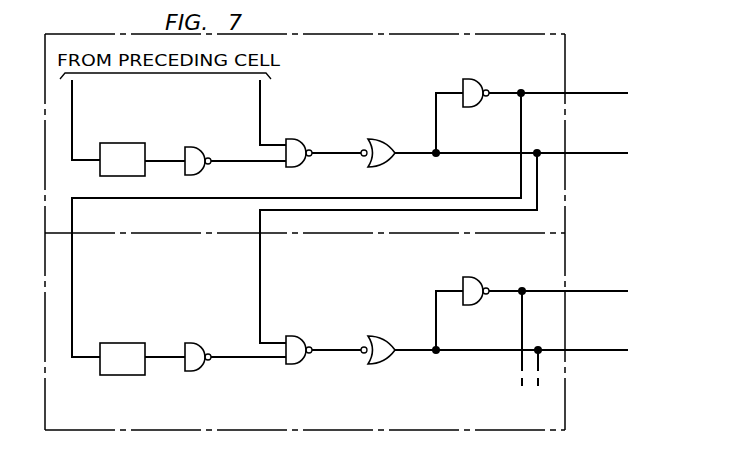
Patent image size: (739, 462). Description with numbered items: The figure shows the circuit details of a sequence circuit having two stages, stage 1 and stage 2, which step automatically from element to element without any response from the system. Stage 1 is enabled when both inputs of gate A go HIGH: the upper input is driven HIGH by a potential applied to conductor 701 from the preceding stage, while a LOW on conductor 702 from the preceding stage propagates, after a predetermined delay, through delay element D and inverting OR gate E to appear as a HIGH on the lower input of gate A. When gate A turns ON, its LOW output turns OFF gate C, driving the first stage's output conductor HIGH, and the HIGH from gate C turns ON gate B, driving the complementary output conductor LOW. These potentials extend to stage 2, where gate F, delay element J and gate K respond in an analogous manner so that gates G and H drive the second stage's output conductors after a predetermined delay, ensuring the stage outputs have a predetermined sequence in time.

The stage 1 is at (45, 148).
The stage 2 is at (45, 306).
The conductor 701 is at (260, 105).
The conductor 702 is at (72, 105).